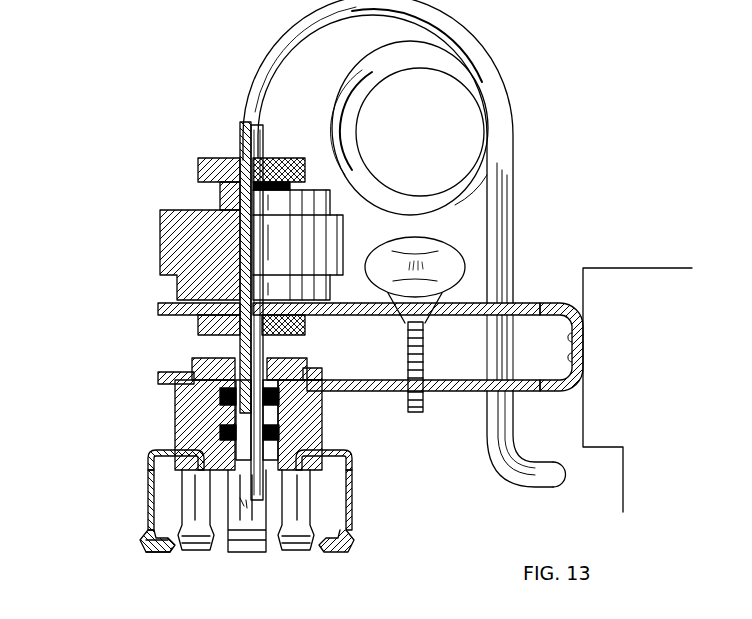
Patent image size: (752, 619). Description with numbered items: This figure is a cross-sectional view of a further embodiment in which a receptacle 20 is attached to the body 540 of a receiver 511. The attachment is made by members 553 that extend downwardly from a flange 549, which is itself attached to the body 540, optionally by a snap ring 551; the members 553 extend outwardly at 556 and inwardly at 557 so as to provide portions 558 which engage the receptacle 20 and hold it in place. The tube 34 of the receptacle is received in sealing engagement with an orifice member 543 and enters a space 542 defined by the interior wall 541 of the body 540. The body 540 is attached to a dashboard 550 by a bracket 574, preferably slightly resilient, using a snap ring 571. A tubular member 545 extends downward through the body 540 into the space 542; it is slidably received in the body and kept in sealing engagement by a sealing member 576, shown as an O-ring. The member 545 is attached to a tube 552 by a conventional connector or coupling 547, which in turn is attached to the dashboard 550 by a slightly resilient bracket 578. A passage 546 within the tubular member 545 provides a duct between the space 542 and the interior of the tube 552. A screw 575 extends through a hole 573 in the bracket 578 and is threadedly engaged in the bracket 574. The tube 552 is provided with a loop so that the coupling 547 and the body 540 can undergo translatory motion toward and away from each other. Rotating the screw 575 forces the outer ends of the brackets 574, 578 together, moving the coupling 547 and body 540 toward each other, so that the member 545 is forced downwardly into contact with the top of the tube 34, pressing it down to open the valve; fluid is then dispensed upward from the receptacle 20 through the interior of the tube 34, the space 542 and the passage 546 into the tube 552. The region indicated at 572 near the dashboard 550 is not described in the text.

The tube 552 is at (514, 139).
The dashboard 550 is at (622, 268).
The opening 572 is at (606, 491).
The bracket 578 is at (520, 306).
The screw 575 is at (428, 250).
The hole 573 is at (407, 330).
The bracket 574 is at (447, 392).
The coupling 547 is at (156, 238).
The passage 546 is at (250, 339).
The tubular member 545 is at (262, 346).
The snap ring 571 is at (310, 369).
The sealing member 576 is at (205, 365).
The body 540 is at (176, 395).
The interior wall 541 is at (262, 419).
The space 542 is at (238, 419).
The orifice member 543 is at (280, 433).
The tube 34 is at (240, 500).
The flange 549 is at (166, 455).
The snap ring 551 is at (152, 465).
The members 553 is at (346, 493).
The outwardly extending portion 556 is at (150, 527).
The portions 558 is at (148, 539).
The inwardly extending portion 557 is at (152, 547).
The receptacle 20 is at (342, 579).
The receiver 511 is at (105, 437).